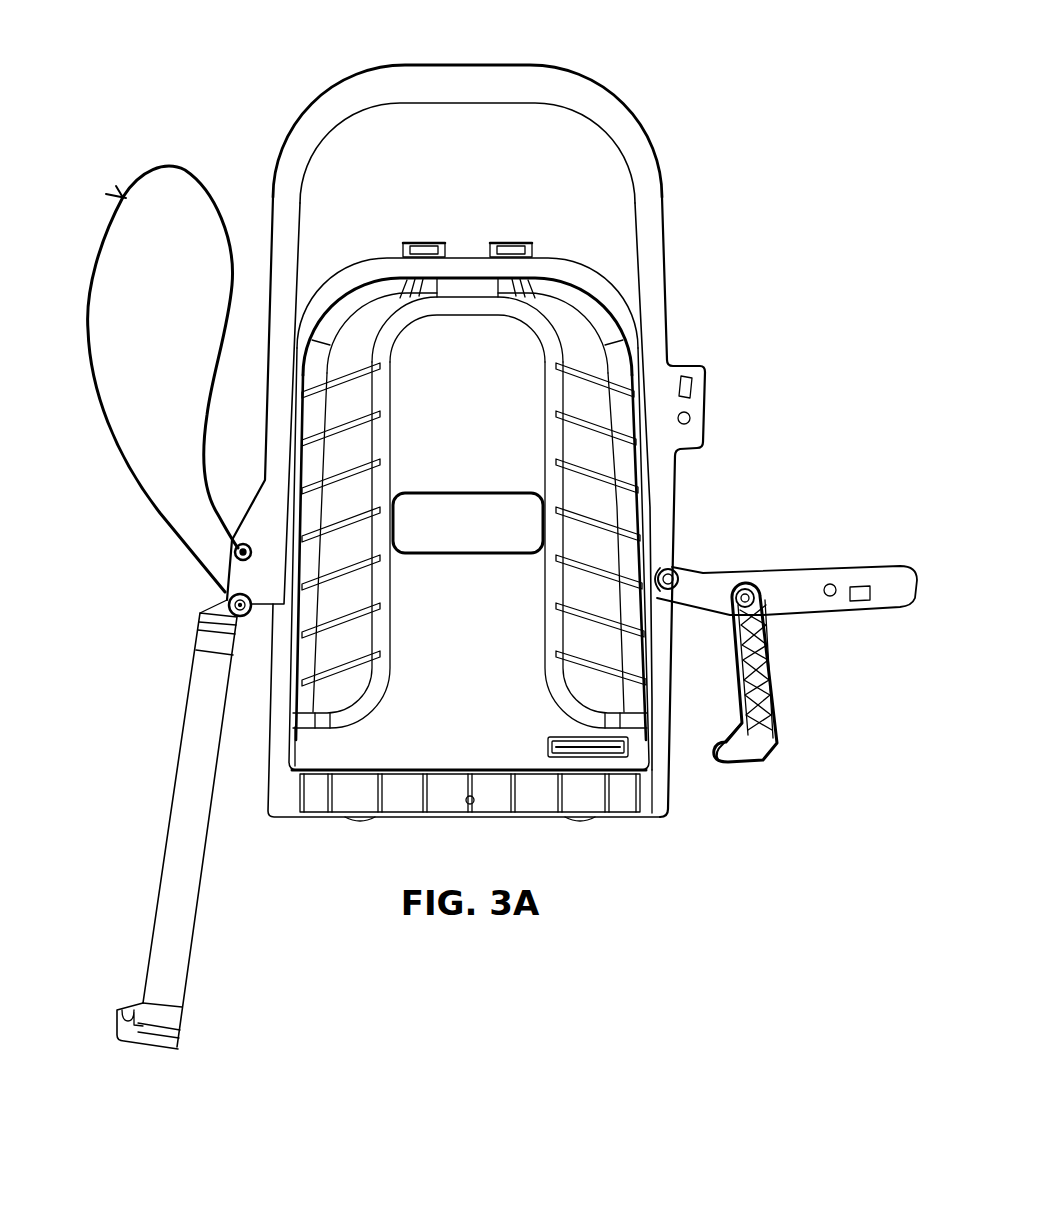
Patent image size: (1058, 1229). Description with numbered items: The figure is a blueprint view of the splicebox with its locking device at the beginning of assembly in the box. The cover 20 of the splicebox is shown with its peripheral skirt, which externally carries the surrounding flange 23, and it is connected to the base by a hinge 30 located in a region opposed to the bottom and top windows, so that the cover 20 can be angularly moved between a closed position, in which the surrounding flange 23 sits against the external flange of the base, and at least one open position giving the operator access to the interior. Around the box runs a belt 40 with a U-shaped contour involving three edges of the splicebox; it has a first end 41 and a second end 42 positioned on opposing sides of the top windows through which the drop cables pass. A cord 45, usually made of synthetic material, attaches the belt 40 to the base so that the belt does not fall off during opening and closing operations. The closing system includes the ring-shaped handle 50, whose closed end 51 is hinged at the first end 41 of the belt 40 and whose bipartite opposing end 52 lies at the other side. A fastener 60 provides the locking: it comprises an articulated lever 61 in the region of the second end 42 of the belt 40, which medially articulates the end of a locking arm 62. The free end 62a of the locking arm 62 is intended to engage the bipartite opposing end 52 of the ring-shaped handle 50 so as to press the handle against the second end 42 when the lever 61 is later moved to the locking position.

The cover 20 is at (475, 328).
The surrounding flange 23 is at (364, 270).
The hinge 30 is at (517, 242).
The belt 40 is at (580, 66).
The first end 41 is at (225, 562).
The second end 42 is at (690, 530).
The cord 45 is at (203, 177).
The ring-shaped handle 50 is at (202, 884).
The closed end 51 is at (195, 610).
The bipartite opposing end 52 is at (137, 1057).
The fastener 60 is at (785, 622).
The articulated lever 61 is at (850, 567).
The locking arm 62 is at (770, 702).
The free end 62a is at (719, 767).